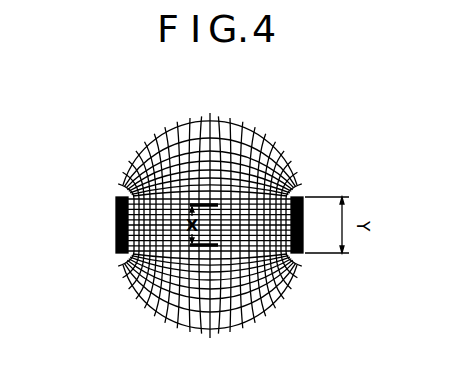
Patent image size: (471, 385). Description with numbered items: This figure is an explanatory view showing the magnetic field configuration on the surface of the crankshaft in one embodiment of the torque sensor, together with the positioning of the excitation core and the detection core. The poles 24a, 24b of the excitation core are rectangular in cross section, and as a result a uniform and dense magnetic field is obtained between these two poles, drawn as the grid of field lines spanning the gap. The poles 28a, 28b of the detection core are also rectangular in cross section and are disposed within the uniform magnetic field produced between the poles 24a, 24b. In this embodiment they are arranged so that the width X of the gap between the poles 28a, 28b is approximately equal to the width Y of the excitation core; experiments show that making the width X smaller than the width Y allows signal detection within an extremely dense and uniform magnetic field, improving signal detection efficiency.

The pole of the excitation core 24a is at (116, 224).
The pole of the excitation core 24b is at (304, 208).
The pole of the detection core 28a is at (211, 125).
The pole of the detection core 28b is at (207, 320).